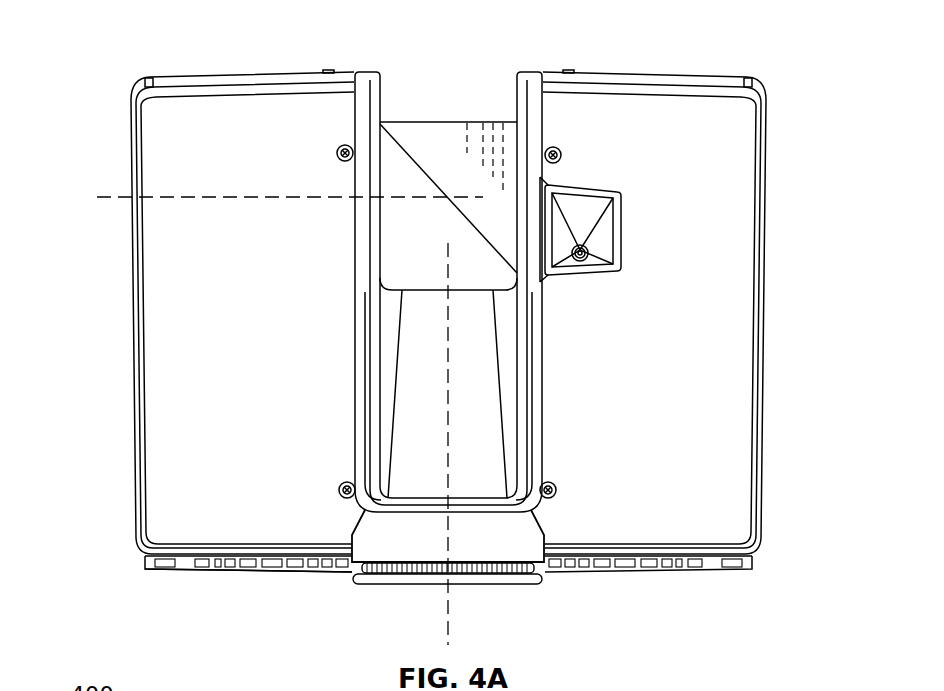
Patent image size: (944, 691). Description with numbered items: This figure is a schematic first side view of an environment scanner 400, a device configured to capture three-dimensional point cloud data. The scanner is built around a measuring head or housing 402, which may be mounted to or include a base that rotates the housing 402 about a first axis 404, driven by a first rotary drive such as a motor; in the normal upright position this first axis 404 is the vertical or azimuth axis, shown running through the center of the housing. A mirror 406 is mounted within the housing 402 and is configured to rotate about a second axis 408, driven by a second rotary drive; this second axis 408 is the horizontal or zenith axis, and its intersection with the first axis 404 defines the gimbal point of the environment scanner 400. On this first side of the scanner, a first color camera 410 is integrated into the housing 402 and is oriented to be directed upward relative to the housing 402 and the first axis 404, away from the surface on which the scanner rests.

The environment scanner 400 is at (124, 42).
The housing 402 is at (743, 136).
The first axis 404 is at (448, 608).
The mirror 406 is at (447, 136).
The second axis 408 is at (115, 196).
The first color camera 410 is at (618, 222).